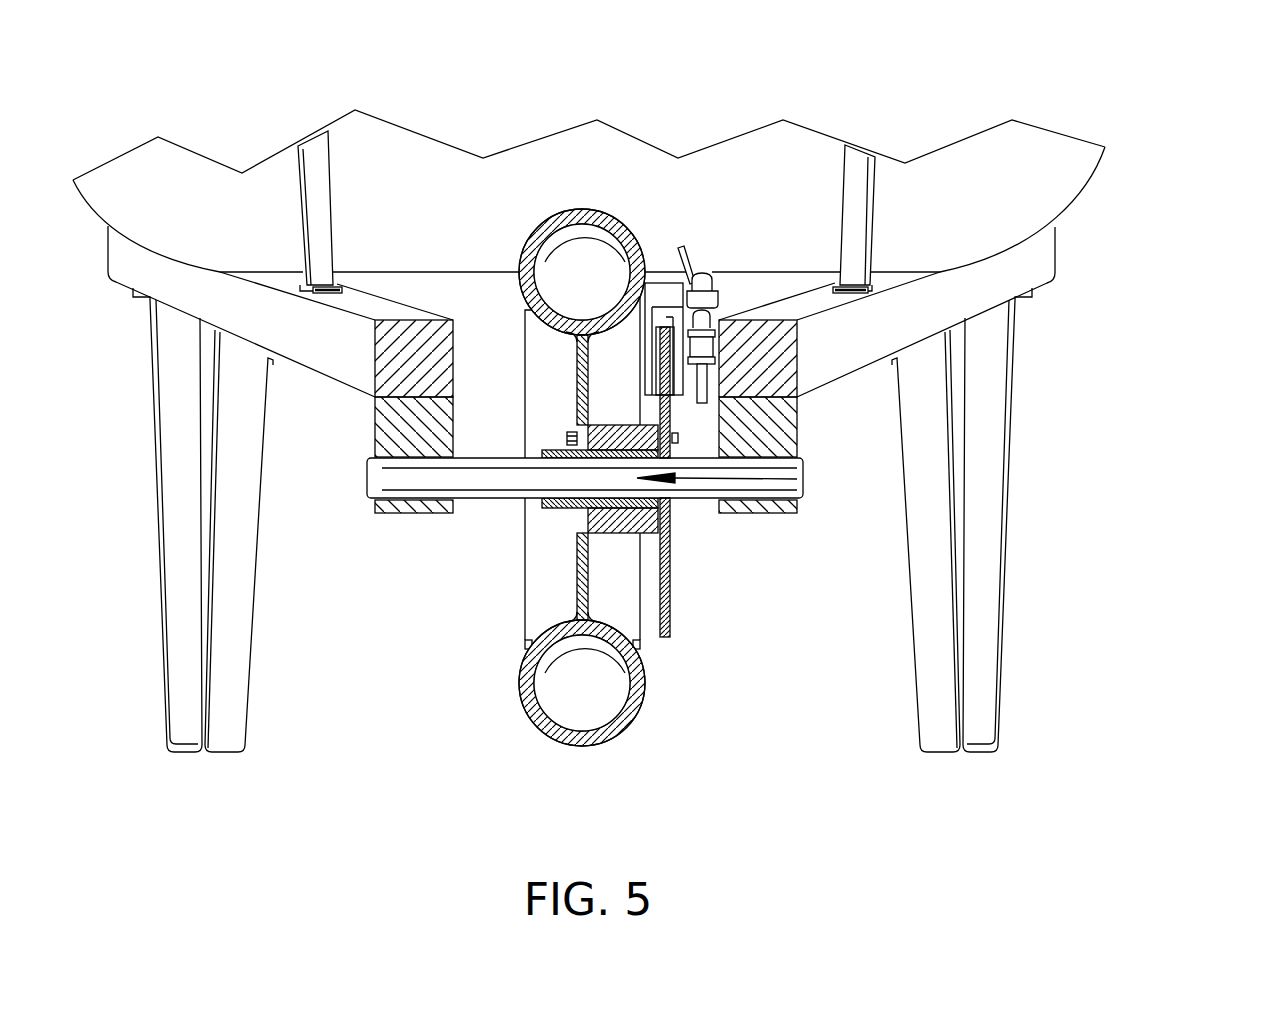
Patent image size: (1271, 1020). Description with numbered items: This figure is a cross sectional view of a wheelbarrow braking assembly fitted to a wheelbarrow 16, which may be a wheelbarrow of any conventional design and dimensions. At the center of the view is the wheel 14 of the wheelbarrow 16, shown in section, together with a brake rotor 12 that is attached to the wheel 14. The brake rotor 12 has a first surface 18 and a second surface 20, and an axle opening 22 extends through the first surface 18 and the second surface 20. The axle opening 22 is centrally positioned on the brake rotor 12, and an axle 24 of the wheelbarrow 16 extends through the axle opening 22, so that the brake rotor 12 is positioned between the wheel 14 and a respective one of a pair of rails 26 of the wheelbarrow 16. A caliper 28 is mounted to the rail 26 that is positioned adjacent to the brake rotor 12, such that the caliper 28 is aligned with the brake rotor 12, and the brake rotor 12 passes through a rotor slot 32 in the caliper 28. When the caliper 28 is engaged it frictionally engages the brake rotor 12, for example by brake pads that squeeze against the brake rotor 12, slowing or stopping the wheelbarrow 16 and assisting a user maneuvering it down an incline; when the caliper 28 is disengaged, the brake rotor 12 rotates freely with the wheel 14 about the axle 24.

The brake rotor 12 is at (667, 638).
The wheel 14 is at (578, 560).
The wheelbarrow 16 is at (1072, 203).
The first surface 18 is at (657, 590).
The second surface 20 is at (670, 560).
The axle opening 22 is at (797, 479).
The axle 24 is at (493, 503).
The rails 26 is at (317, 372).
The caliper 28 is at (663, 292).
The rotor slot 32 is at (672, 392).